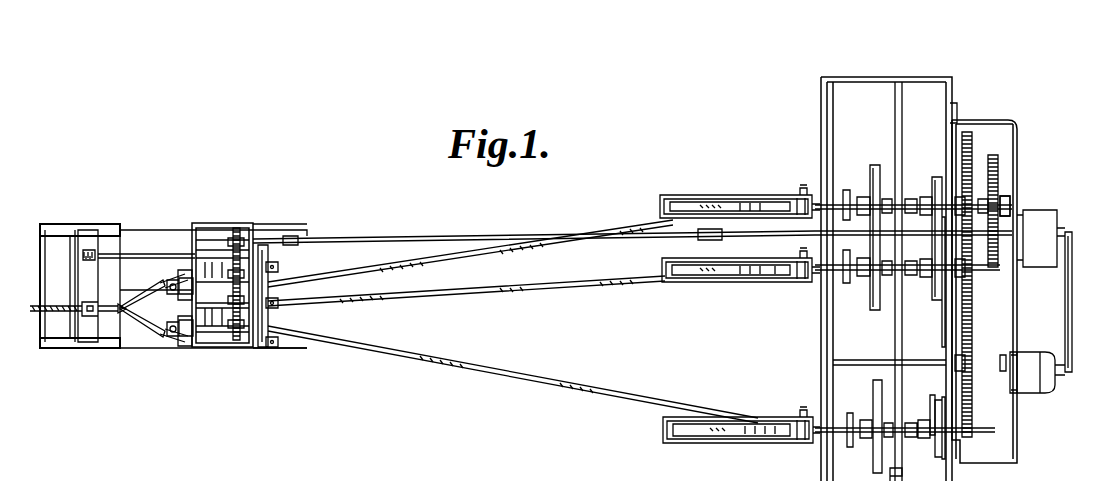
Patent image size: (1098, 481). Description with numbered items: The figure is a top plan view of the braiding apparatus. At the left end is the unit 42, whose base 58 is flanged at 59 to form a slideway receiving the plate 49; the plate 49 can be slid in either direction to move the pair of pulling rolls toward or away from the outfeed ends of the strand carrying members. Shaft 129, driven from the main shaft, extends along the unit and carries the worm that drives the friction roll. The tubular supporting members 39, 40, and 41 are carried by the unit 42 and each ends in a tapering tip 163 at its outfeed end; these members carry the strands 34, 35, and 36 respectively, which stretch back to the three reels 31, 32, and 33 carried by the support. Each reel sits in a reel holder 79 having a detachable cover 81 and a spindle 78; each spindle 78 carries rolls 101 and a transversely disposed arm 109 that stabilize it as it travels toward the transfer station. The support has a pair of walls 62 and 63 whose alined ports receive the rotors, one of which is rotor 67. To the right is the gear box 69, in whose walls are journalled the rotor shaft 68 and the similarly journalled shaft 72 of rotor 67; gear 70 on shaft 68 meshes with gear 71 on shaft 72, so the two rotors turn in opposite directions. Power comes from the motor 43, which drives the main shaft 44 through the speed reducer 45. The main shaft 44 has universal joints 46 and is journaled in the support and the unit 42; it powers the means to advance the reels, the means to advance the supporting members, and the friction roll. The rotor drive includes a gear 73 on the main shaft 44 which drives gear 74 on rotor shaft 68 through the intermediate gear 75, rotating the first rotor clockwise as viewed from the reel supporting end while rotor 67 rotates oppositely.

The reel 31 is at (740, 212).
The reel 32 is at (755, 276).
The reel 33 is at (760, 432).
The strand 34 is at (520, 246).
The strand 35 is at (527, 283).
The strand 36 is at (478, 366).
The supporting member 39 is at (258, 283).
The supporting member 40 is at (178, 270).
The supporting member 41 is at (190, 334).
The unit 42 is at (237, 222).
The motor 43 is at (1037, 385).
The main shaft 44 is at (478, 236).
The speed reducer 45 is at (1040, 216).
The universal joint 46 is at (300, 238).
The plate 49 is at (92, 336).
The base 58 is at (150, 342).
The flange 59 is at (80, 226).
The wall 62 is at (820, 105).
The wall 63 is at (900, 130).
The rotor 67 is at (859, 358).
The rotor shaft 68 is at (1010, 200).
The gear box 69 is at (1016, 140).
The gear 70 is at (970, 137).
The gear 71 is at (974, 425).
The rotor shaft 72 is at (1002, 380).
The gear 73 is at (994, 279).
The gear 74 is at (988, 190).
The intermediate gear 75 is at (998, 163).
The spindle 78 is at (928, 434).
The reel holder 79 is at (673, 192).
The cover 81 is at (692, 284).
The roll 101 is at (846, 192).
The arm 109 is at (930, 398).
The shaft 129 is at (141, 252).
The tip 163 is at (142, 297).